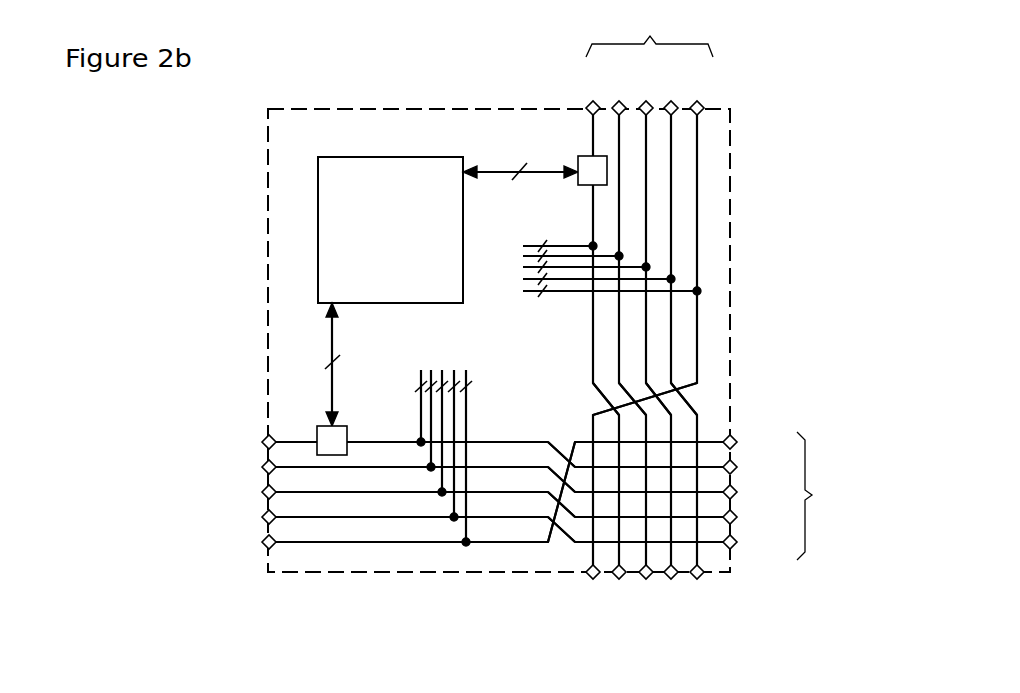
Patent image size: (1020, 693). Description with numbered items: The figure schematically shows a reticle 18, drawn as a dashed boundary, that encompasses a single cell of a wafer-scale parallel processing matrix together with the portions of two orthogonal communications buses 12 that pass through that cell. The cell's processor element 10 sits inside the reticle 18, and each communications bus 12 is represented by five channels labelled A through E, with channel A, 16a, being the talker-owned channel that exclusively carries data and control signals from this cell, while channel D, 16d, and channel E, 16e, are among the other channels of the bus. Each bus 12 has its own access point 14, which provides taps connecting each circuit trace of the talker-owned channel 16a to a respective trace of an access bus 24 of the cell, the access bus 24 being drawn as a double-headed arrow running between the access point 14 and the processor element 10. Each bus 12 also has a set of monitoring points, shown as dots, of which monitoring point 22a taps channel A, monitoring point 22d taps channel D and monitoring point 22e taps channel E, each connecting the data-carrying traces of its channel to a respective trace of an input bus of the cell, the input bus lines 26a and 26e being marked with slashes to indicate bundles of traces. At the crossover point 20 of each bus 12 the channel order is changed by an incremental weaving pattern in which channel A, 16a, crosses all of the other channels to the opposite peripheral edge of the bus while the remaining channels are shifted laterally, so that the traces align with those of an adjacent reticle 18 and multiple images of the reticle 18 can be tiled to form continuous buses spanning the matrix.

The processor element 10 is at (390, 230).
The communications bus 12 is at (543, 310).
The access point 14 is at (578, 158).
The channel A 16a is at (503, 440).
The channel D 16d is at (718, 548).
The channel E 16e is at (733, 434).
The reticle 18 is at (388, 108).
The crossover point 20 is at (712, 393).
The monitoring point 22a is at (593, 246).
The monitoring point 22d is at (676, 280).
The monitoring point 22e is at (702, 291).
The access bus 24 is at (506, 168).
The input bus 26a is at (546, 246).
The input bus 26e is at (550, 296).